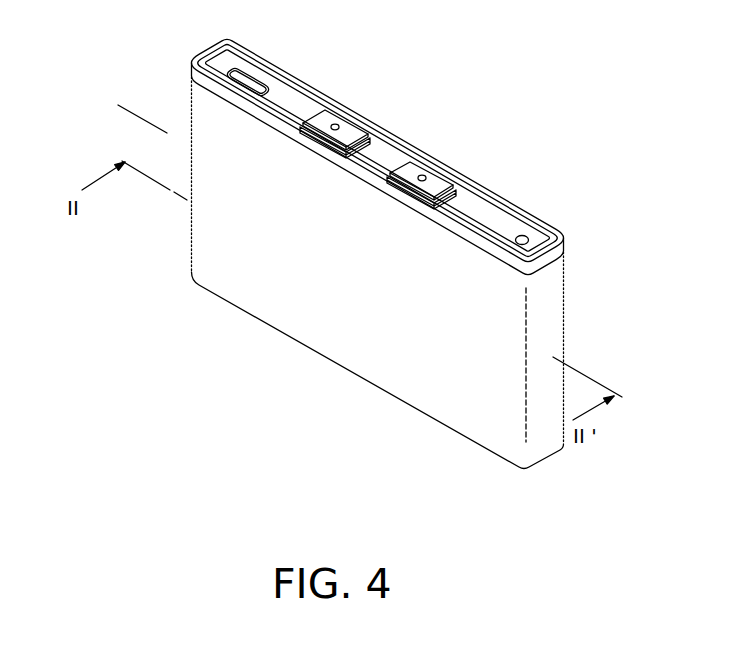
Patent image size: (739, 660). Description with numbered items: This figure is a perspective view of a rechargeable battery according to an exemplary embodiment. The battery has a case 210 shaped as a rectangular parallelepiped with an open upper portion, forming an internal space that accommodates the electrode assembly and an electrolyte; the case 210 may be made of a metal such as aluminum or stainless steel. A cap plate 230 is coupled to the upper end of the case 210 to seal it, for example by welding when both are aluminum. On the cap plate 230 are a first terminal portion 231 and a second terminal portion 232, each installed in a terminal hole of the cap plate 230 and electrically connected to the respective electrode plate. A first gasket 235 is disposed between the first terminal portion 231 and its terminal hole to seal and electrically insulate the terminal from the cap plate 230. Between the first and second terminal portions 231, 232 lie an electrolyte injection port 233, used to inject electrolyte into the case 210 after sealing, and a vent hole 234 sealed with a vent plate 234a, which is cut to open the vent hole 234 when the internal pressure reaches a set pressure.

The case 210 is at (297, 282).
The cap plate 230 is at (512, 172).
The first terminal portion 231 is at (333, 123).
The second terminal portion 232 is at (422, 174).
The electrolyte injection port 233 is at (527, 235).
The vent hole 234 is at (266, 88).
The vent plate 234a is at (250, 68).
The first gasket 235 is at (458, 198).